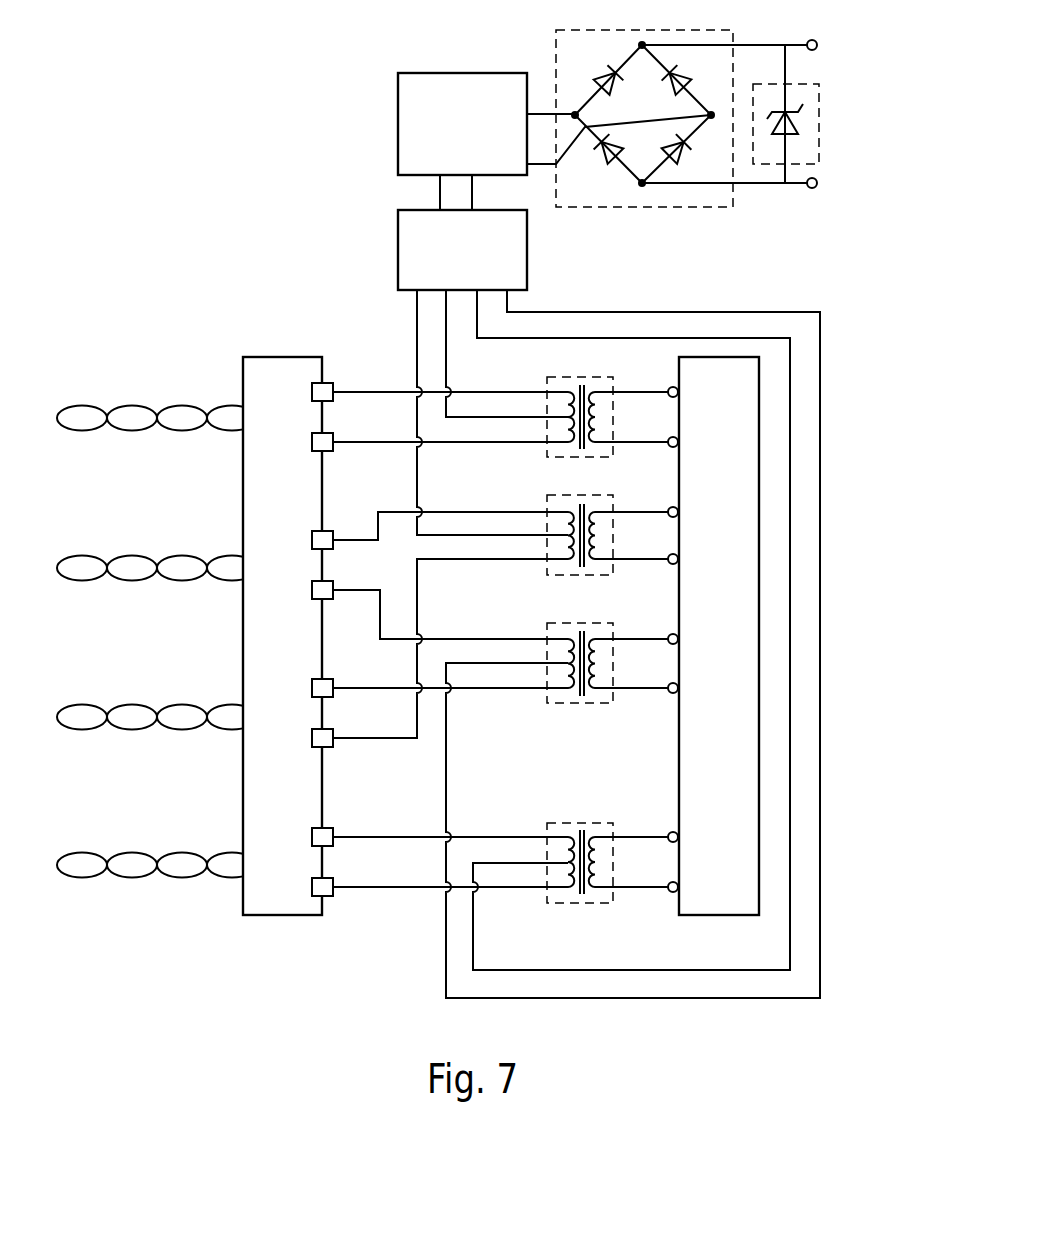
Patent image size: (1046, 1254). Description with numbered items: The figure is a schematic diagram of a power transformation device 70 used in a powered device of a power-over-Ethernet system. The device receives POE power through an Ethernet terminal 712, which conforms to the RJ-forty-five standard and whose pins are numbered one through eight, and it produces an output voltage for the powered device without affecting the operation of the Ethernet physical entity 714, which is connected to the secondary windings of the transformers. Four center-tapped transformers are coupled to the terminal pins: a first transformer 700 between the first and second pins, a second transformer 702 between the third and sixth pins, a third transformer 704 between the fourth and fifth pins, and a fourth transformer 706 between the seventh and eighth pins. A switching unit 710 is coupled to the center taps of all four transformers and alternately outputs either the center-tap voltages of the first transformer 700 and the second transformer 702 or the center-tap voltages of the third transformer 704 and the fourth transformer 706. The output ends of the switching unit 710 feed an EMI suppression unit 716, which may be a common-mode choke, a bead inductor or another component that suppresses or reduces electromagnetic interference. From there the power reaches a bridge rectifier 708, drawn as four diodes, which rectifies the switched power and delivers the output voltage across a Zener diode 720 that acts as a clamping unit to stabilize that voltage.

The power transformation device 70 is at (264, 106).
The first transformer 700 is at (598, 377).
The second transformer 702 is at (598, 495).
The third transformer 704 is at (598, 623).
The fourth transformer 706 is at (580, 823).
The bridge rectifier 708 is at (733, 30).
The switching unit 710 is at (399, 220).
The Ethernet terminal 712 is at (285, 357).
The Ethernet physical entity 714 is at (718, 915).
The EMI suppression unit 716 is at (408, 73).
The Zener diode 720 is at (801, 83).